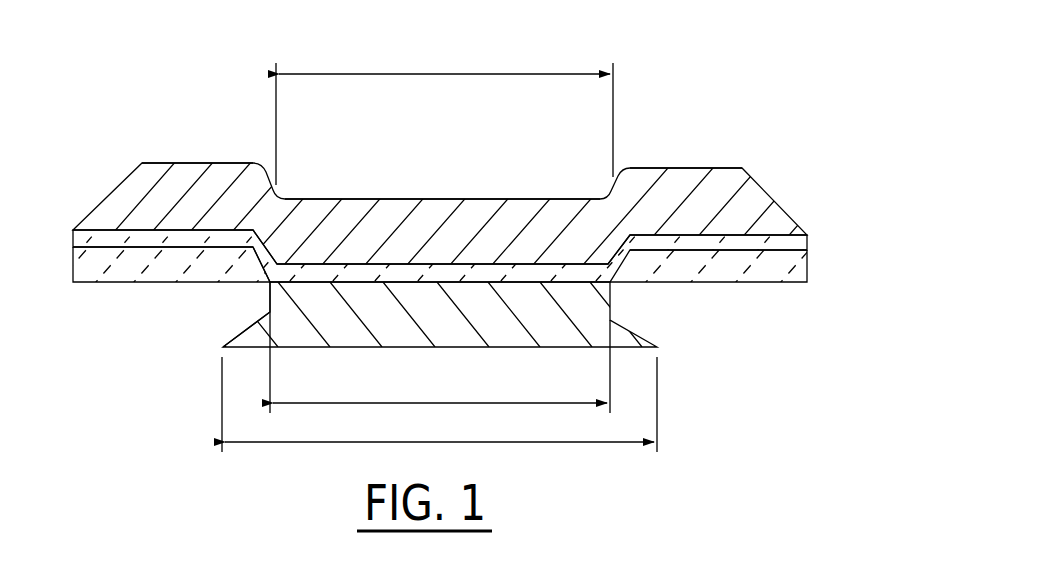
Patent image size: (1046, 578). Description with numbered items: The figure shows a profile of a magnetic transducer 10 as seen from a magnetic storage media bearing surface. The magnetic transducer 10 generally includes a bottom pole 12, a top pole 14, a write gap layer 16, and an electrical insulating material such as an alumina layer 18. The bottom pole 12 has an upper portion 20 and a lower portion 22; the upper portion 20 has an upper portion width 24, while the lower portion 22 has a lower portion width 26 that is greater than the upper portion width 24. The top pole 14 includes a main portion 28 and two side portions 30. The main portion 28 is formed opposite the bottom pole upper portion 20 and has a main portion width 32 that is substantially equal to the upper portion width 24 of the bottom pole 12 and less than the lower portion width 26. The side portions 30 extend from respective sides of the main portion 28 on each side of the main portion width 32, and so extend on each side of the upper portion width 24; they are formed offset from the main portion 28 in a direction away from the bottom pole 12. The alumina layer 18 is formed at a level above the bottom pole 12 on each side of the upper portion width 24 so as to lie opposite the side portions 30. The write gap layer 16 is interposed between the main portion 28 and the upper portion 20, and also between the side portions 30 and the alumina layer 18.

The magnetic transducer 10 is at (760, 29).
The bottom pole 12 is at (615, 303).
The top pole 14 is at (532, 194).
The write gap layer 16 is at (811, 235).
The alumina layer 18 is at (811, 262).
The upper portion 20 is at (270, 292).
The lower portion 22 is at (248, 330).
The upper portion width 24 is at (422, 400).
The lower portion width 26 is at (448, 437).
The main portion 28 is at (333, 197).
The side portions 30 is at (172, 162).
The main portion width 32 is at (440, 72).